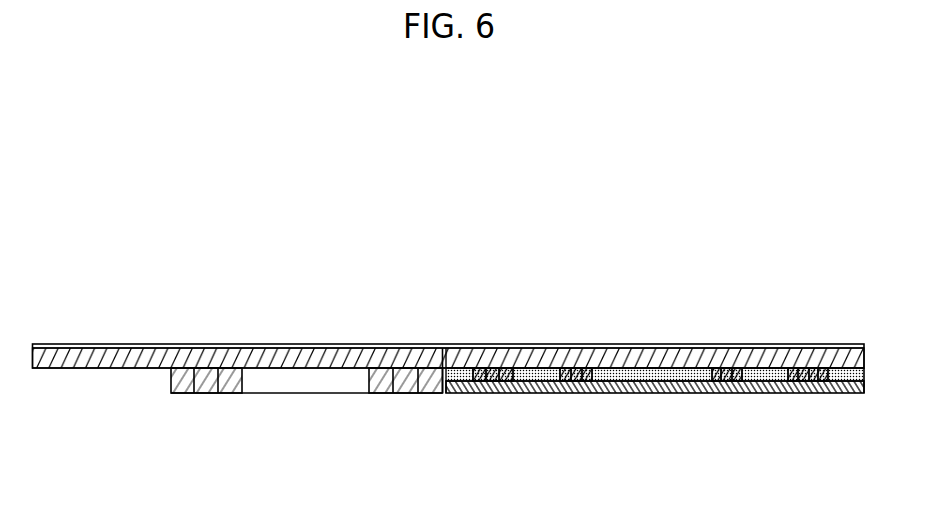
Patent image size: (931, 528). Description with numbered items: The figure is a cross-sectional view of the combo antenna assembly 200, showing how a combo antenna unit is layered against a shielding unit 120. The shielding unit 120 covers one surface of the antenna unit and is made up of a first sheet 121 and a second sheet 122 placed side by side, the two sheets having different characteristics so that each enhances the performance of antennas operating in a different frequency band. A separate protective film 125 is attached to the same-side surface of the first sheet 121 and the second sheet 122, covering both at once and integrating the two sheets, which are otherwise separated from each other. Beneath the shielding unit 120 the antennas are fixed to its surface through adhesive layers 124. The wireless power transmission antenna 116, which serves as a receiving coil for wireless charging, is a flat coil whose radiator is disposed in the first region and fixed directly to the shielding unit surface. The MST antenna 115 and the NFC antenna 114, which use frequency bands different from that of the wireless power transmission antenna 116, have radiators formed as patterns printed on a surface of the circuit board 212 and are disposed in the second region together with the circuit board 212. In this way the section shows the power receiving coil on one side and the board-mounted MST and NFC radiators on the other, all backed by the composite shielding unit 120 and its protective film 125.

The display device 200 is at (413, 158).
The shielding unit 120 is at (430, 238).
The first sheet 121 is at (415, 346).
The second sheet 122 is at (482, 346).
The adhesive layer 124 is at (209, 346).
The protective film 125 is at (668, 346).
The NFC antenna 114 is at (489, 390).
The MST antenna 115 is at (572, 390).
The wireless power transmission antenna 116 is at (209, 396).
The circuit board 212 is at (691, 388).